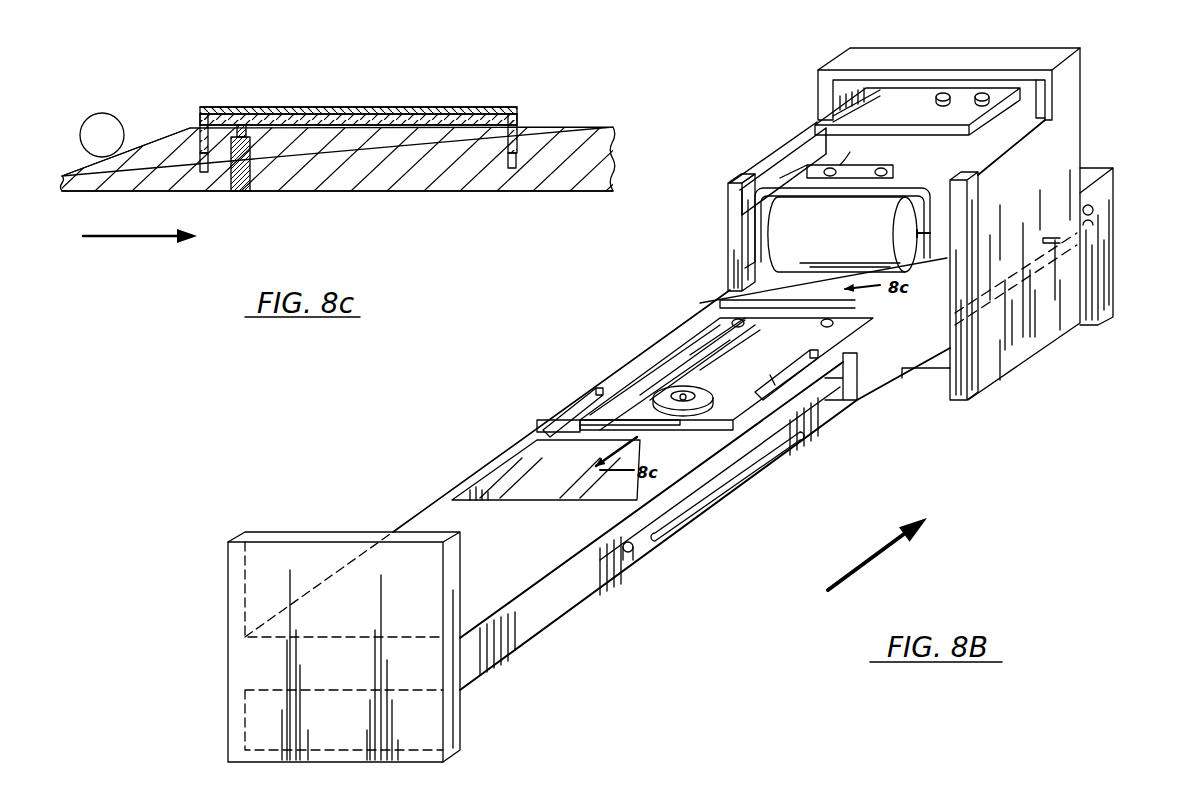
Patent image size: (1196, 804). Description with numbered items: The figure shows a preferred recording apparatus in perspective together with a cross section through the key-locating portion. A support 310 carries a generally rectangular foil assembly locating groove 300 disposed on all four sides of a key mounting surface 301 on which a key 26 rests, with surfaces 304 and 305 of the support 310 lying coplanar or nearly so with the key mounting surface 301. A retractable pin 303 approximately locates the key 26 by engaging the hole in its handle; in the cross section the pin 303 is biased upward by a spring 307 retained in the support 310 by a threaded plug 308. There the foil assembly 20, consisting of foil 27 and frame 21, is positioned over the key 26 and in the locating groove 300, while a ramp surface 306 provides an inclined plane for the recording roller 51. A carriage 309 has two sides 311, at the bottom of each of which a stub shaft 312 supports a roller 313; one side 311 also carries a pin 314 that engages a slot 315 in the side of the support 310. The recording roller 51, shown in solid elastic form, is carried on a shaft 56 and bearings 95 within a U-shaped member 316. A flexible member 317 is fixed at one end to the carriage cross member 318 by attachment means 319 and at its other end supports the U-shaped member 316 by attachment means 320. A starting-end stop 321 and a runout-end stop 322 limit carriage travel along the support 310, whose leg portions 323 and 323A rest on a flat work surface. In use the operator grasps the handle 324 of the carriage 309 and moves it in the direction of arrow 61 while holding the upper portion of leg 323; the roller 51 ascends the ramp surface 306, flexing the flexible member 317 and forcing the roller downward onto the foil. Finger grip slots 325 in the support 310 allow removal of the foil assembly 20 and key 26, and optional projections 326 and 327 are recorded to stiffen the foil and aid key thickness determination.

In FIG. 8c, the foil assembly 20 is at (505, 88).
In FIG. 8c, the frame 21 is at (520, 118).
In FIG. 8c, the key 26 is at (470, 117).
In FIG. 8B, the key 26 is at (730, 353).
In FIG. 8c, the foil 27 is at (422, 107).
In FIG. 8c, the recording roller 51 is at (105, 118).
In FIG. 8B, the recording roller 51 is at (840, 236).
In FIG. 8B, the shaft 56 is at (937, 257).
In FIG. 8c, the arrow 61 is at (148, 238).
In FIG. 8B, the arrow 61 is at (871, 561).
In FIG. 8B, the bearings 95 is at (768, 225).
In FIG. 8c, the foil assembly locating groove 300 is at (203, 163).
In FIG. 8B, the foil assembly locating groove 300 is at (702, 322).
In FIG. 8c, the key mounting surface 301 is at (480, 130).
In FIG. 8B, the key mounting surface 301 is at (608, 383).
In FIG. 8c, the retractable pin 303 is at (277, 113).
In FIG. 8B, the retractable pin 303 is at (627, 388).
In FIG. 8c, the surface 304 is at (198, 112).
In FIG. 8B, the surface 304 is at (540, 432).
In FIG. 8c, the surface 305 is at (603, 127).
In FIG. 8B, the surface 305 is at (733, 292).
In FIG. 8c, the ramp surface 306 is at (158, 137).
In FIG. 8B, the ramp surface 306 is at (523, 473).
In FIG. 8c, the spring 307 is at (247, 163).
In FIG. 8c, the threaded plug 308 is at (240, 193).
In FIG. 8B, the carriage 309 is at (740, 177).
In FIG. 8c, the support 310 is at (500, 178).
In FIG. 8B, the support 310 is at (555, 603).
In FIG. 8B, the side 311 is at (1082, 128).
In FIG. 8B, the stub shaft 312 is at (937, 372).
In FIG. 8B, the roller 313 is at (887, 393).
In FIG. 8B, the pin 314 is at (1072, 242).
In FIG. 8B, the slot 315 is at (740, 480).
In FIG. 8B, the U-shaped member 316 is at (777, 178).
In FIG. 8B, the flexible member 317 is at (847, 147).
In FIG. 8B, the carriage cross member 318 is at (890, 100).
In FIG. 8B, the attachment means 319 is at (982, 93).
In FIG. 8B, the attachment means 320 is at (882, 168).
In FIG. 8B, the starting-end stop 321 is at (636, 548).
In FIG. 8B, the runout-end stop 322 is at (1092, 212).
In FIG. 8B, the leg 323 is at (462, 718).
In FIG. 8B, the leg portion 323A is at (1108, 265).
In FIG. 8B, the handle 324 is at (1068, 62).
In FIG. 8B, the finger grip slots 325 is at (607, 385).
In FIG. 8B, the projections 326 is at (683, 398).
In FIG. 8B, the projections 327 is at (788, 292).